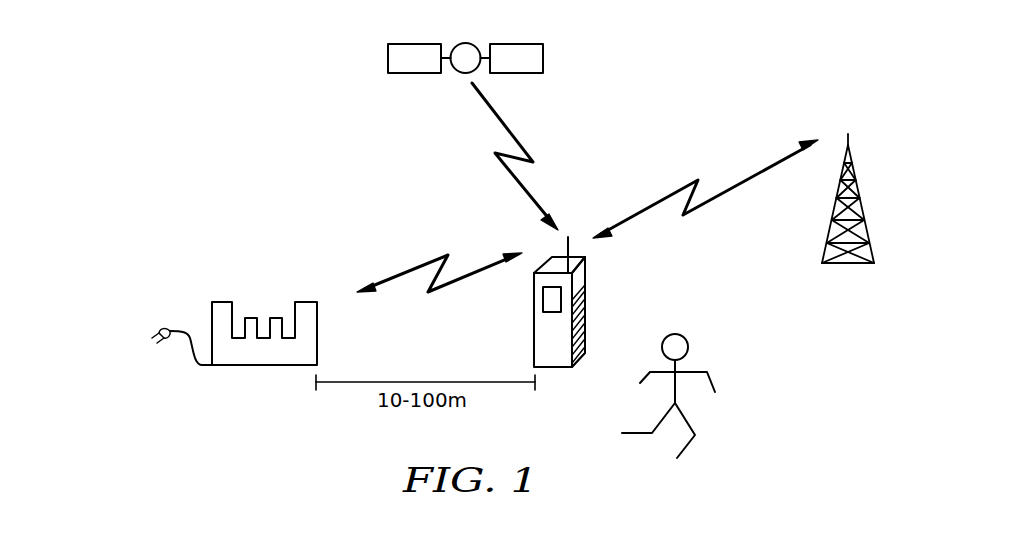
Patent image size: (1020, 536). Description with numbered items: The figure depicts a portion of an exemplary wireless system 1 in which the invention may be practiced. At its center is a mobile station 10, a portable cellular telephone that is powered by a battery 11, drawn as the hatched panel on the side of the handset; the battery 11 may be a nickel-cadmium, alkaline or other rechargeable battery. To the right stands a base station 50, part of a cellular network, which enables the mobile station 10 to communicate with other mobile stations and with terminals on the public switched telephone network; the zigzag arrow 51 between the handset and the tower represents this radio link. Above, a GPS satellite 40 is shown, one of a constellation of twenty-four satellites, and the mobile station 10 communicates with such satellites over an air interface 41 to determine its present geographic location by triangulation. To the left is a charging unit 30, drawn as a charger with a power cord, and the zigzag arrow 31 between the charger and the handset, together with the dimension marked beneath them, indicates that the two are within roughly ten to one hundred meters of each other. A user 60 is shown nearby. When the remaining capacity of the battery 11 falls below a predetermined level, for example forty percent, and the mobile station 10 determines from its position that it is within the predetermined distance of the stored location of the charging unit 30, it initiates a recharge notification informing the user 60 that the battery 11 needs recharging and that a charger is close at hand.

The wireless system 1 is at (196, 104).
The mobile station 10 is at (534, 300).
The battery 11 is at (585, 320).
The charging unit 30 is at (217, 300).
The charger radio signal 31 is at (420, 263).
The GPS satellite 40 is at (543, 58).
The air interface 41 is at (512, 133).
The base station 50 is at (858, 190).
The base station radio signal 51 is at (750, 175).
The user 60 is at (710, 372).